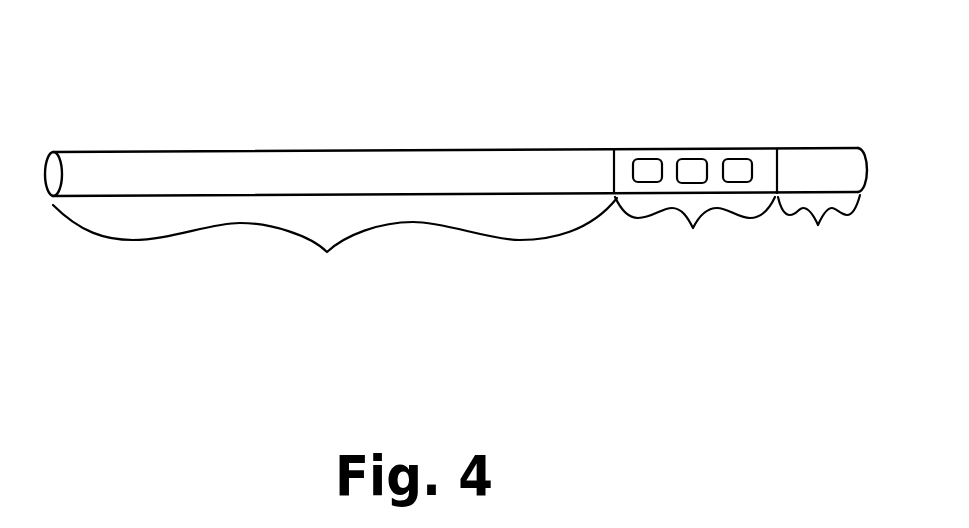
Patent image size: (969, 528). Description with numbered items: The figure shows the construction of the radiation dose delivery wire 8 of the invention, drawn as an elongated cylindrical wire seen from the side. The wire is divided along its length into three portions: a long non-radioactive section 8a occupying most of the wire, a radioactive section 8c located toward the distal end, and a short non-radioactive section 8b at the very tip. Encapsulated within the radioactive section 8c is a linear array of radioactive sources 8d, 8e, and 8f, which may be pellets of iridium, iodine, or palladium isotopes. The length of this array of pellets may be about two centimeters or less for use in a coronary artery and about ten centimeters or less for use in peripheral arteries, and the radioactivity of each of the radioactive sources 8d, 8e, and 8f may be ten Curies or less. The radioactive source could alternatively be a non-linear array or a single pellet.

The radiation dose delivery wire 8 is at (240, 150).
The non-radioactive section 8a is at (335, 250).
The non-radioactive section 8b is at (819, 237).
The radioactive section 8c is at (695, 214).
The radioactive source 8d is at (647, 159).
The radioactive source 8e is at (695, 159).
The radioactive source 8f is at (737, 159).